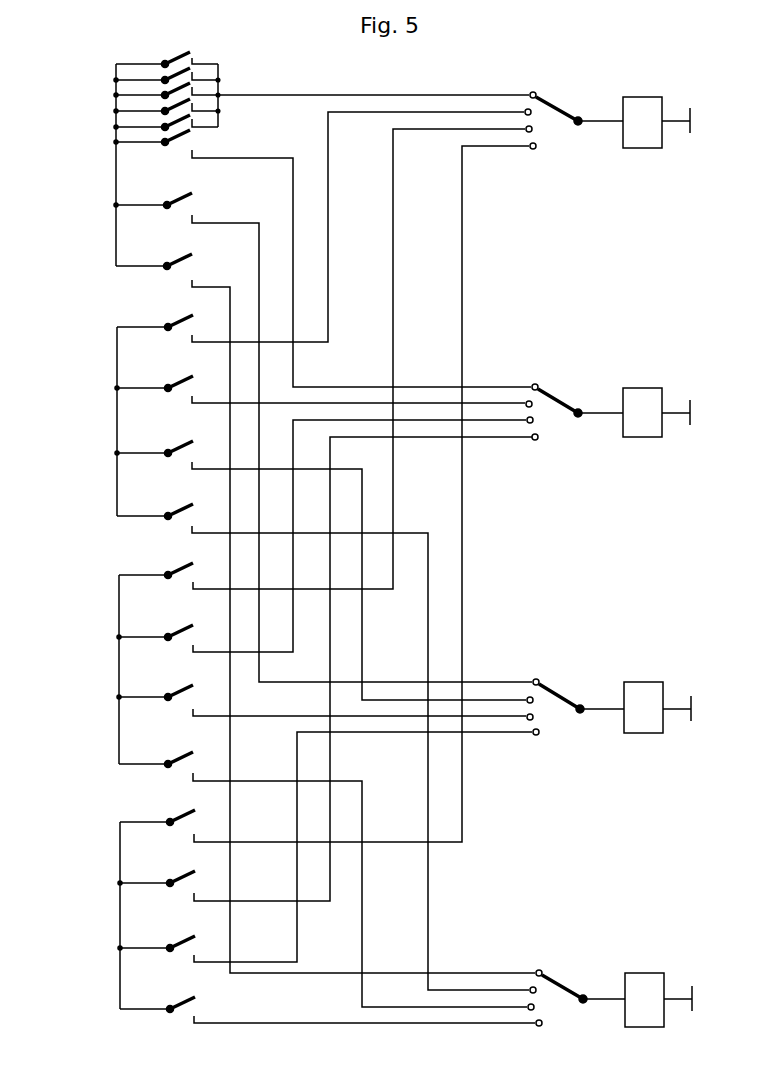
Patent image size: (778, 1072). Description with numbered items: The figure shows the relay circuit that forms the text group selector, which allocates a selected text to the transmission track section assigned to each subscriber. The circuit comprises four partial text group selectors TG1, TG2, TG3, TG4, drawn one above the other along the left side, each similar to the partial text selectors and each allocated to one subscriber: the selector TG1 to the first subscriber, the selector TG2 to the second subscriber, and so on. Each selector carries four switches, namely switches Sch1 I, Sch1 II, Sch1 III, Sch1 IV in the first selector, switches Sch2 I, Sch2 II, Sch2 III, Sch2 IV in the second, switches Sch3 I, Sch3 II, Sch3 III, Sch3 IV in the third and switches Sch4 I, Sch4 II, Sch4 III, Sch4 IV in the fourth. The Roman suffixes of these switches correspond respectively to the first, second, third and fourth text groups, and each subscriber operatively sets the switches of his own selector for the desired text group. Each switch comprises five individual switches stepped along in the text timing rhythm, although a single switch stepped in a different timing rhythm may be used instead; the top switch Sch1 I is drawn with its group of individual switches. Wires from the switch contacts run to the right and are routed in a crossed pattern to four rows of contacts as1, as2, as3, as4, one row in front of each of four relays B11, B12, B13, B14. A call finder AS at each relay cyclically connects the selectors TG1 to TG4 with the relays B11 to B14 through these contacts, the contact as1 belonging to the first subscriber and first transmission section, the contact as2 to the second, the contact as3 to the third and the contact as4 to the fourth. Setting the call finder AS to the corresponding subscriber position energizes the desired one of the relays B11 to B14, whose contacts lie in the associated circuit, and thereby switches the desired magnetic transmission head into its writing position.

The partial text group selector TG1 is at (76, 167).
The partial text group selector TG2 is at (76, 423).
The partial text group selector TG3 is at (77, 671).
The partial text group selector TG4 is at (78, 917).
The switch Sch1 I is at (322, 91).
The switch Sch1 II is at (361, 259).
The switch Sch1 III is at (324, 430).
The switch Sch1 IV is at (325, 606).
The switch Sch2 I is at (323, 739).
The switch Sch2 II is at (320, 227).
The switch Sch2 III is at (321, 381).
The switch Sch2 IV is at (321, 562).
The switch Sch3 I is at (322, 692).
The switch Sch3 II is at (323, 871).
The switch Sch3 III is at (322, 359).
The switch Sch3 IV is at (322, 536).
The switch Sch4 I is at (326, 669).
The switch Sch4 II is at (326, 847).
The switch Sch4 III is at (327, 1002).
The switch Sch4 IV is at (324, 494).
The call finder position as1 is at (523, 525).
The call finder position as2 is at (516, 544).
The call finder position as3 is at (512, 561).
The call finder position as4 is at (518, 577).
The call finder AS is at (580, 555).
The relay B11 is at (656, 111).
The relay B12 is at (658, 989).
The relay B13 is at (657, 697).
The relay B14 is at (656, 401).